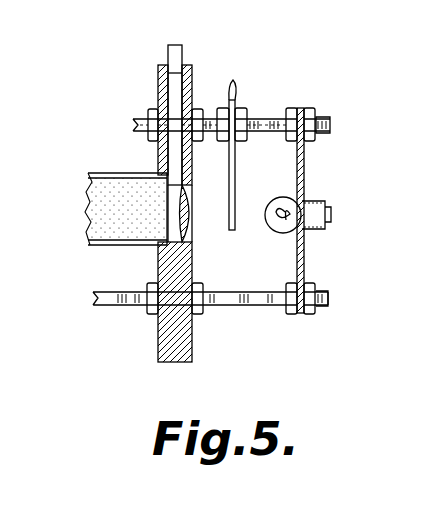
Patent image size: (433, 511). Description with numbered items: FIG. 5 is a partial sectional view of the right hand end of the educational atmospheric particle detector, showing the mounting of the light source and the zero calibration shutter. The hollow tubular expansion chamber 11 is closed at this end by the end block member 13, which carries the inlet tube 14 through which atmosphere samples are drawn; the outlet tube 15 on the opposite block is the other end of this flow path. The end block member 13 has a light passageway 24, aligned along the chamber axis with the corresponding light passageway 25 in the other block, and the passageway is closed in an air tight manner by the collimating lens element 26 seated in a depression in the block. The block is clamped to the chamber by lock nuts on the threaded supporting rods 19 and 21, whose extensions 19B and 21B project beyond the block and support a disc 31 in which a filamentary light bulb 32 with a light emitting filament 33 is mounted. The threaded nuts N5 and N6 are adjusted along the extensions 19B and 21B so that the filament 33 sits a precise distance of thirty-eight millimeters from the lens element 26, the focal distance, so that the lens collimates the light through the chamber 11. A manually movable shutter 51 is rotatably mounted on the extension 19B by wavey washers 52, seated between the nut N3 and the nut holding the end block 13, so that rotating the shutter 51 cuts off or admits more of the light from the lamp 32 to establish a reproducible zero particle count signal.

The inlet tube 14 is at (184, 52).
The light passageway 25 is at (176, 100).
The threaded supporting rod 19 is at (131, 125).
The extension of threaded supporting rod 19B is at (324, 117).
The tubular expansion chamber 11 is at (112, 174).
The outlet tube 15 is at (108, 238).
The lens element 26 is at (190, 210).
The light passageway 24 is at (184, 230).
The end block member 13 is at (160, 269).
The threaded supporting rod 21 is at (108, 306).
The extension of threaded supporting rod 21B is at (322, 306).
The wavey washers 52 is at (234, 82).
The manually movable shutter 51 is at (236, 160).
The threaded nut N3 is at (222, 108).
The threaded nut N5 is at (291, 108).
The threaded nut N6 is at (309, 108).
The disc 31 is at (305, 168).
The filamentary light bulb 32 is at (278, 197).
The light emitting filament 33 is at (279, 234).